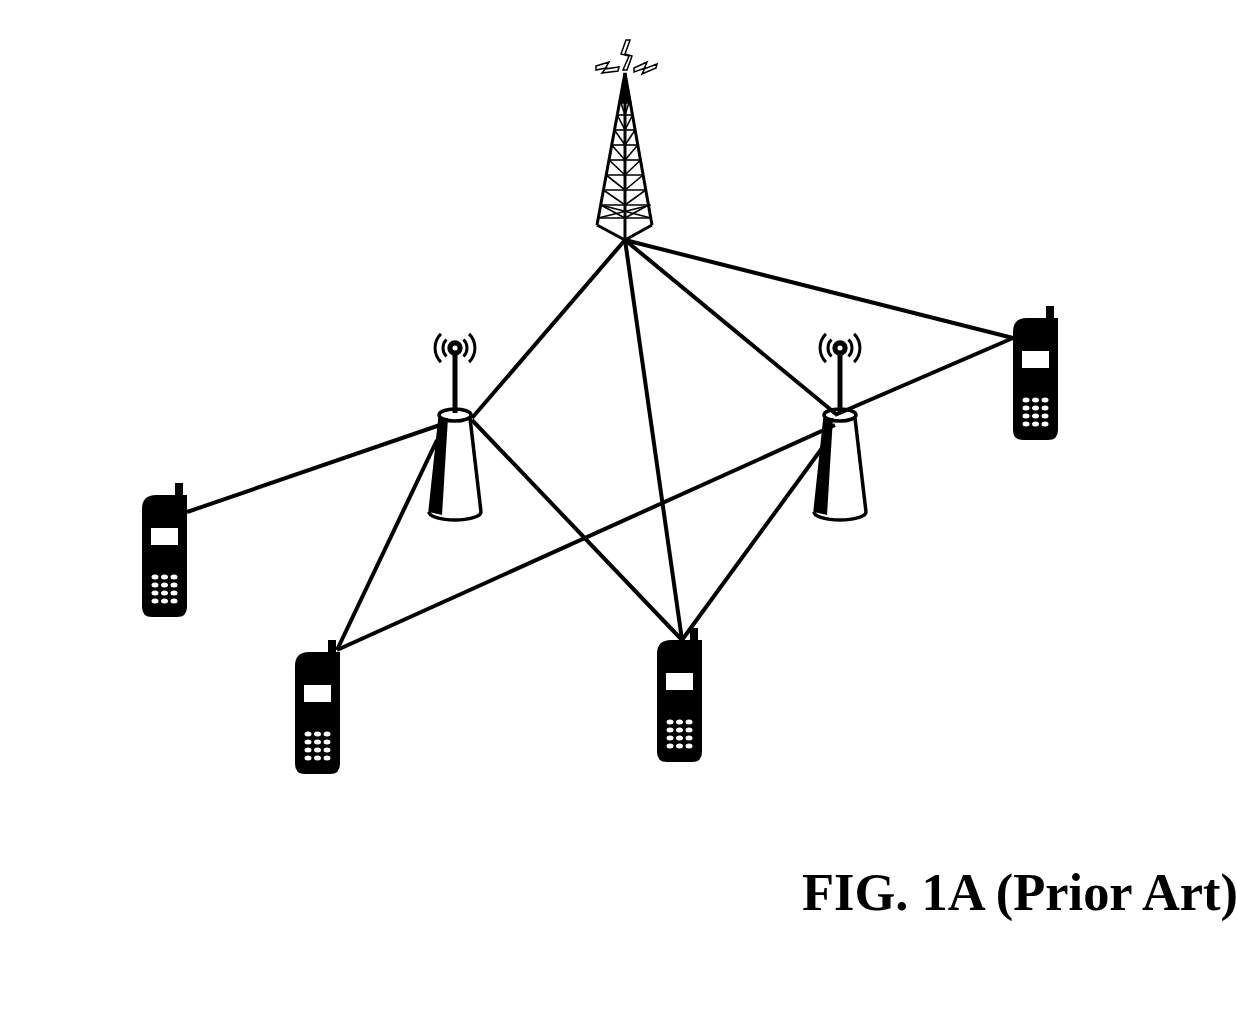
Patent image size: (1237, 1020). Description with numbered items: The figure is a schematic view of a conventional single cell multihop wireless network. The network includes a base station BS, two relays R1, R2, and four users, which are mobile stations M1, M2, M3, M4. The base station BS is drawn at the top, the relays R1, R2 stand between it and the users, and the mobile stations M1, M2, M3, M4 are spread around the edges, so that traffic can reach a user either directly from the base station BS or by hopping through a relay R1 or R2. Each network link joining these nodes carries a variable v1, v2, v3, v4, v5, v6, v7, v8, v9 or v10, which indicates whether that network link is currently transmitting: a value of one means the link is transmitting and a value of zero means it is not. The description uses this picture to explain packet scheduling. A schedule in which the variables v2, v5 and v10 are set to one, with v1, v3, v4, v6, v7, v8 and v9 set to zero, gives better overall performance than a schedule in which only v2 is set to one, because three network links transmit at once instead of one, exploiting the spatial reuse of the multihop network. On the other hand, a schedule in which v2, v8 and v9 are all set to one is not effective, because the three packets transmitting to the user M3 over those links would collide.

The base station BS is at (660, 140).
The relay R1 is at (456, 457).
The relay R2 is at (842, 457).
The user (mobile station) M1 is at (210, 550).
The user (mobile station) M2 is at (362, 710).
The user (mobile station) M3 is at (733, 698).
The user (mobile station) M4 is at (1089, 373).
The network link variable v1 is at (548, 329).
The network link variable v2 is at (644, 440).
The network link variable v3 is at (730, 327).
The network link variable v4 is at (819, 287).
The network link variable v5 is at (313, 453).
The network link variable v6 is at (382, 545).
The network link variable v7 is at (586, 546).
The network link variable v8 is at (577, 530).
The network link variable v9 is at (755, 540).
The network link variable v10 is at (924, 385).